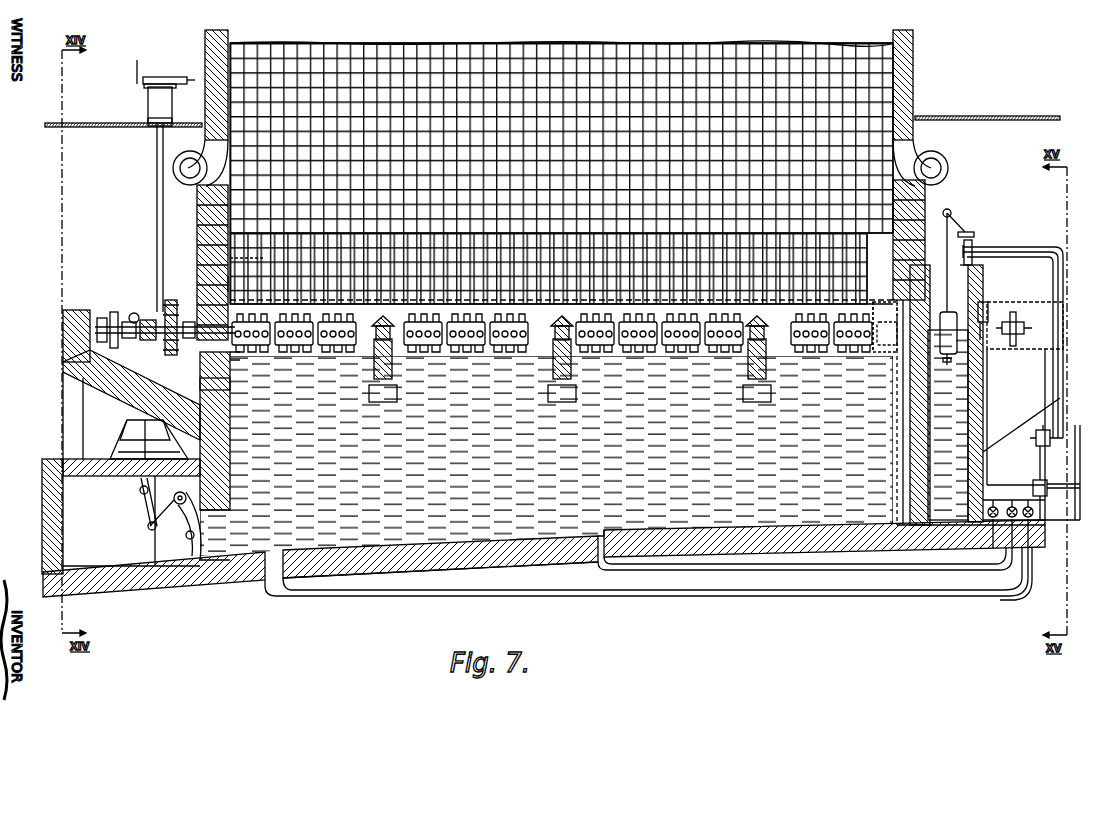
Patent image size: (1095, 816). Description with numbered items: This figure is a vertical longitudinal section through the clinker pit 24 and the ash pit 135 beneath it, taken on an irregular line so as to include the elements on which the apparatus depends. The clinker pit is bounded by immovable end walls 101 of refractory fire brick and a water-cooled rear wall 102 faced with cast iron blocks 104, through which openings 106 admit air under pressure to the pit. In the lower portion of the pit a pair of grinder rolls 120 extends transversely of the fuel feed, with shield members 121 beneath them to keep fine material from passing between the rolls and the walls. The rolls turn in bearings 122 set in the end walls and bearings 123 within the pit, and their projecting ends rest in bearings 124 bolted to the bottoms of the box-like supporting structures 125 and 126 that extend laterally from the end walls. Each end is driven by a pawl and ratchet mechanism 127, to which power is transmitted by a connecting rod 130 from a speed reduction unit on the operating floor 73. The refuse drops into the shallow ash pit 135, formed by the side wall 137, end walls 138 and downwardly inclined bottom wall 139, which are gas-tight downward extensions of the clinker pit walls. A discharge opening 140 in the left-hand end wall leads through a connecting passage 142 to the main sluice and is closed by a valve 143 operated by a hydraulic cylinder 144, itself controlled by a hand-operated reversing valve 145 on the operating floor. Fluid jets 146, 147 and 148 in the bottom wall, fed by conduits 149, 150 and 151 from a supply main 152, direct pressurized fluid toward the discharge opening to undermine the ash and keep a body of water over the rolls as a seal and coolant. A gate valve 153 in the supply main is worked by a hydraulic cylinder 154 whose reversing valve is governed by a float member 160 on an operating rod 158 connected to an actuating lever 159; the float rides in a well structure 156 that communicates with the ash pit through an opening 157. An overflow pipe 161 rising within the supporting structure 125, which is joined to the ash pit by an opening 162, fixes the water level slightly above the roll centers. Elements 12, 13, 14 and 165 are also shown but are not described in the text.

The upper wall plate 12 is at (222, 36).
The brick wall 13 is at (785, 70).
The pit wall 14 is at (20, 478).
The clinker pit 24 is at (858, 270).
The operating floor 73 is at (66, 126).
The end walls 101 is at (230, 240).
The rear wall 102 is at (574, 262).
The cast iron blocks 104 is at (347, 55).
The openings 106 is at (265, 258).
The grinder rolls 120 is at (873, 353).
The shield members 121 is at (376, 306).
The bearings 122 is at (230, 370).
The bearings 123 is at (392, 374).
The bearings 124 is at (149, 311).
The box-like supporting structure 125 is at (80, 349).
The box-like supporting structure 126 is at (1053, 299).
The pawl and ratchet mechanism 127 is at (173, 360).
The connecting rod 130 is at (230, 282).
The ash pit 135 is at (380, 591).
The side wall 137 is at (584, 443).
The end walls 138 is at (232, 445).
The bottom wall 139 is at (538, 567).
The discharge opening 140 is at (232, 529).
The connecting passage 142 is at (80, 476).
The valve 143 is at (200, 548).
The hydraulic cylinder 144 is at (142, 429).
The hand-operated reversing valve 145 is at (171, 84).
The fluid jet 146 is at (262, 556).
The fluid jet 147 is at (566, 537).
The fluid jet 148 is at (910, 513).
The conduit 149 is at (283, 592).
The conduit 150 is at (686, 576).
The conduit 151 is at (960, 553).
The supply main 152 is at (1033, 488).
The gate valve 153 is at (1050, 486).
The hydraulic cylinder 154 is at (1036, 440).
The well structure 156 is at (975, 286).
The opening 157 is at (903, 472).
The operating rod 158 is at (975, 271).
The actuating lever 159 is at (955, 214).
The float member 160 is at (947, 306).
The overflow pipe 161 is at (132, 312).
The opening 162 is at (212, 386).
The lever 165 is at (970, 237).